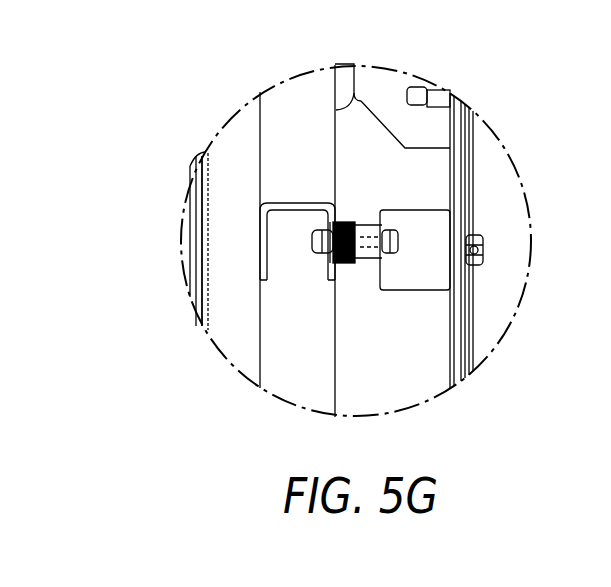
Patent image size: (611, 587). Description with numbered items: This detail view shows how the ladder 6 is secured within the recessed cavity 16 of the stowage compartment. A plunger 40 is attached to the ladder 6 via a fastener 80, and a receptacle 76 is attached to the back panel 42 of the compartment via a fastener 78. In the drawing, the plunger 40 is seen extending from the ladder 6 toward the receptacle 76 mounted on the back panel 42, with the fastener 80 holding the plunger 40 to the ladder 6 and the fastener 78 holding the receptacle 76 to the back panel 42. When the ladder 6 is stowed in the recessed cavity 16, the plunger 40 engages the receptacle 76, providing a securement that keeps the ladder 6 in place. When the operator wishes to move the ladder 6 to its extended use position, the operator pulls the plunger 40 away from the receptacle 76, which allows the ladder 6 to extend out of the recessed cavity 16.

The ladder 6 is at (361, 101).
The recessed cavity 16 is at (408, 365).
The plunger 40 is at (346, 222).
The back panel 42 is at (463, 178).
The receptacle 76 is at (425, 290).
The fastener 78 is at (483, 256).
The fastener 80 is at (316, 250).